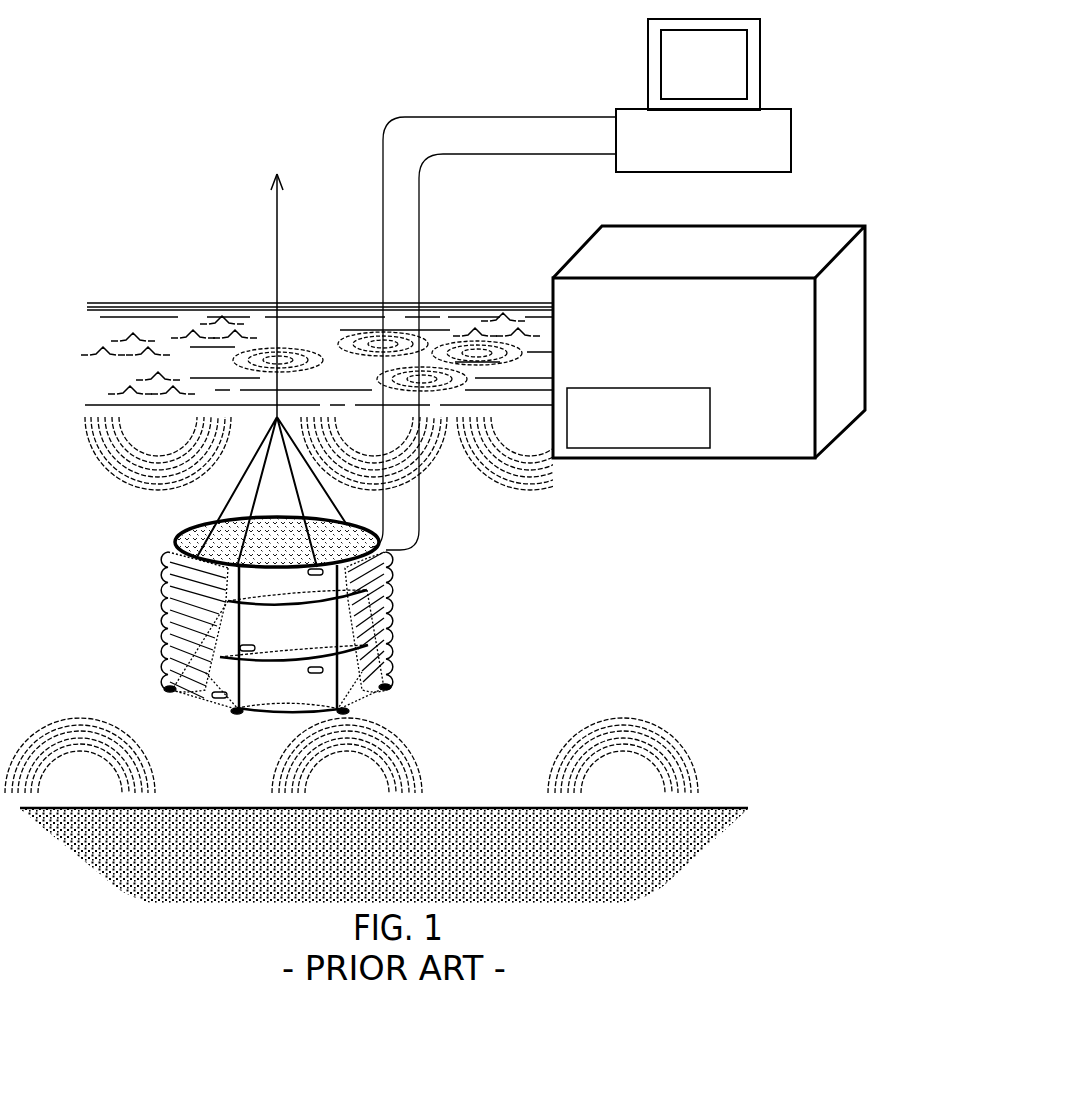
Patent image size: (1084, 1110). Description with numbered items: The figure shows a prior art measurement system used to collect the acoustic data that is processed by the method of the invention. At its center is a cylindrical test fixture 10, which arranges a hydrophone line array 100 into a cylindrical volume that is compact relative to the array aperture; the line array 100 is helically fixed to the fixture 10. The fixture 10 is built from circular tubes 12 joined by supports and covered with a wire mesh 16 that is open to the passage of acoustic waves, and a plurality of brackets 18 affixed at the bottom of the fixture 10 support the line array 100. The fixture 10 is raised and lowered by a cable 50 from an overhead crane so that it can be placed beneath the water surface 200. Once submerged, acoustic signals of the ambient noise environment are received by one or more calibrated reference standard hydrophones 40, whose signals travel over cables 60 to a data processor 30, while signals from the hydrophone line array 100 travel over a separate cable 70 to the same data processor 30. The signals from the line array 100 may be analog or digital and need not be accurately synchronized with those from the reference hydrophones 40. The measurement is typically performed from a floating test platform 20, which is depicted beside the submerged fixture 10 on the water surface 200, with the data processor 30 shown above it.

The cylindrical test fixture 10 is at (258, 659).
The circular tubes 12 is at (203, 523).
The wire mesh 16 is at (180, 541).
The brackets 18 is at (345, 712).
The floating test platform 20 is at (845, 342).
The data processor 30 is at (791, 145).
The calibrated reference standard hydrophones 40 is at (216, 708).
The cable 50 is at (278, 272).
The cables 60 is at (541, 115).
The cable 70 is at (575, 158).
The hydrophone line array 100 is at (392, 666).
The water surface 200 is at (111, 300).